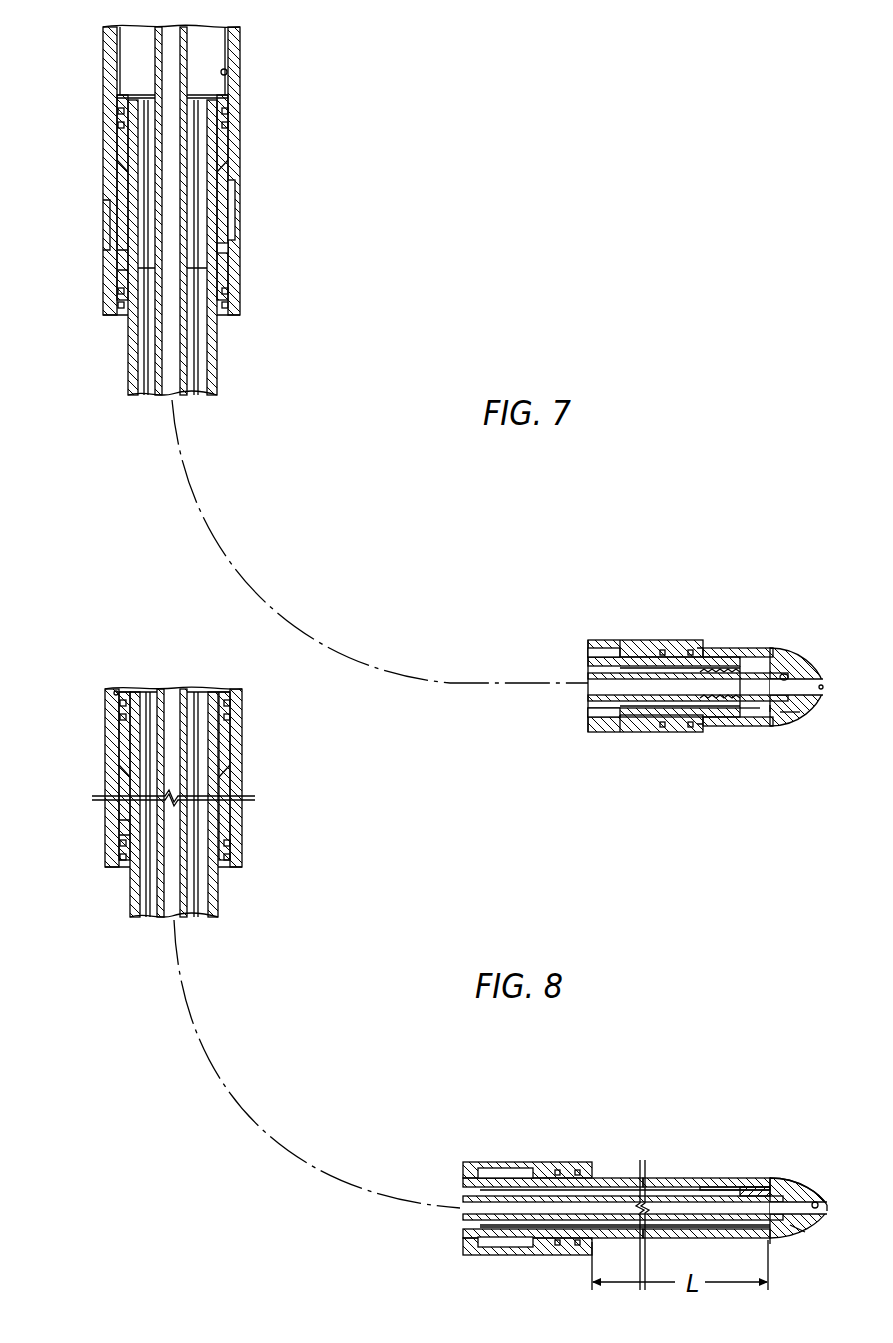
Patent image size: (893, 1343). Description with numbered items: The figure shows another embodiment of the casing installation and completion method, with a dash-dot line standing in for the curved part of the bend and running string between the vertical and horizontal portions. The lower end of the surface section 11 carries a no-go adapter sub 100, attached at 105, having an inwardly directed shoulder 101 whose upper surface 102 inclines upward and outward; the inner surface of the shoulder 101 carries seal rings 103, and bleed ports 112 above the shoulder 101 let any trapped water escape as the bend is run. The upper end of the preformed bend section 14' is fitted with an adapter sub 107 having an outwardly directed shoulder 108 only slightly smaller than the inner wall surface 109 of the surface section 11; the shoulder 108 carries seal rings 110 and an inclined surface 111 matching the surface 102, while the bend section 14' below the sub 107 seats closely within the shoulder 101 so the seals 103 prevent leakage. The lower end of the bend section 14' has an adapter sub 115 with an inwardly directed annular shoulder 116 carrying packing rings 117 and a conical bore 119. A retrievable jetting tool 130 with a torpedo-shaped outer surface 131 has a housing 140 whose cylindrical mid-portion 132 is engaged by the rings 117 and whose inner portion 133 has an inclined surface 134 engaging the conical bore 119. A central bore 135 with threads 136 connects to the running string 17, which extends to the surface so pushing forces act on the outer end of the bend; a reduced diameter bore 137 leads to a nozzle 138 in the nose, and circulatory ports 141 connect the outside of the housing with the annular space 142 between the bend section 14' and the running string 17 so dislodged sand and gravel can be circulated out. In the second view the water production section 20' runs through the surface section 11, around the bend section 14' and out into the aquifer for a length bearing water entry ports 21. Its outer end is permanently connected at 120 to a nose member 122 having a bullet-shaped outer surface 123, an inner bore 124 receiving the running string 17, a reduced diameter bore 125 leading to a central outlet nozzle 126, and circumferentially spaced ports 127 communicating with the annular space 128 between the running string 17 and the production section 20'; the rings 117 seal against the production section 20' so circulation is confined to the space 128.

In FIG. 7, the surface section 11 is at (242, 48).
In FIG. 8, the surface section 11 is at (243, 708).
In FIG. 7, the preformed bend section 14' is at (405, 445).
In FIG. 8, the preformed bend section 14' is at (386, 965).
In FIG. 7, the running string 17 is at (188, 362).
In FIG. 8, the running string 17 is at (160, 880).
In FIG. 8, the water production section 20' is at (418, 974).
In FIG. 8, the water entry ports 21 is at (718, 1186).
In FIG. 7, the no-go adapter sub 100 is at (242, 232).
In FIG. 8, the no-go adapter sub 100 is at (243, 818).
In FIG. 7, the inwardly directed shoulder 101 is at (232, 291).
In FIG. 8, the inwardly directed shoulder 101 is at (226, 848).
In FIG. 7, the upper surface 102 is at (112, 280).
In FIG. 8, the upper surface 102 is at (120, 822).
In FIG. 7, the seal rings 103 is at (222, 310).
In FIG. 8, the seal rings 103 is at (120, 855).
In FIG. 7, the attachment 105 is at (237, 207).
In FIG. 7, the adapter sub 107 is at (136, 196).
In FIG. 8, the adapter sub 107 is at (119, 758).
In FIG. 7, the outwardly directed shoulder 108 is at (214, 125).
In FIG. 7, the inner wall surface 109 is at (226, 72).
In FIG. 8, the inner wall surface 109 is at (116, 690).
In FIG. 7, the seal rings 110 is at (119, 112).
In FIG. 8, the seal rings 110 is at (120, 712).
In FIG. 7, the inclined surface 111 is at (118, 175).
In FIG. 8, the inclined surface 111 is at (222, 768).
In FIG. 7, the bleed ports 112 is at (232, 248).
In FIG. 7, the adapter sub 115 is at (652, 638).
In FIG. 8, the adapter sub 115 is at (536, 1160).
In FIG. 7, the inwardly directed annular shoulder 116 is at (680, 648).
In FIG. 7, the packing rings 117 is at (703, 648).
In FIG. 8, the packing rings 117 is at (565, 1170).
In FIG. 7, the conical bore 119 is at (650, 710).
In FIG. 8, the permanent connection 120 is at (730, 1186).
In FIG. 8, the nose member 122 is at (800, 1186).
In FIG. 8, the bullet-shaped outer surface 123 is at (797, 1228).
In FIG. 8, the inner bore 124 is at (756, 1195).
In FIG. 8, the reduced diameter bore 125 is at (813, 1203).
In FIG. 8, the central outlet nozzle 126 is at (825, 1212).
In FIG. 8, the circumferentially spaced ports 127 is at (770, 1243).
In FIG. 8, the annular space 128 is at (674, 1240).
In FIG. 7, the retrievable jetting tool 130 is at (778, 640).
In FIG. 7, the torpedo-shaped outer surface 131 is at (790, 703).
In FIG. 7, the cylindrical mid-portion 132 is at (750, 655).
In FIG. 7, the inner portion 133 is at (627, 700).
In FIG. 7, the inclined surface 134 is at (658, 660).
In FIG. 7, the central bore 135 is at (623, 668).
In FIG. 7, the threads 136 is at (716, 700).
In FIG. 7, the reduced diameter bore 137 is at (786, 676).
In FIG. 7, the nozzle 138 is at (822, 690).
In FIG. 7, the housing 140 is at (745, 710).
In FIG. 7, the circulatory ports 141 is at (770, 713).
In FIG. 7, the annular space 142 is at (210, 388).